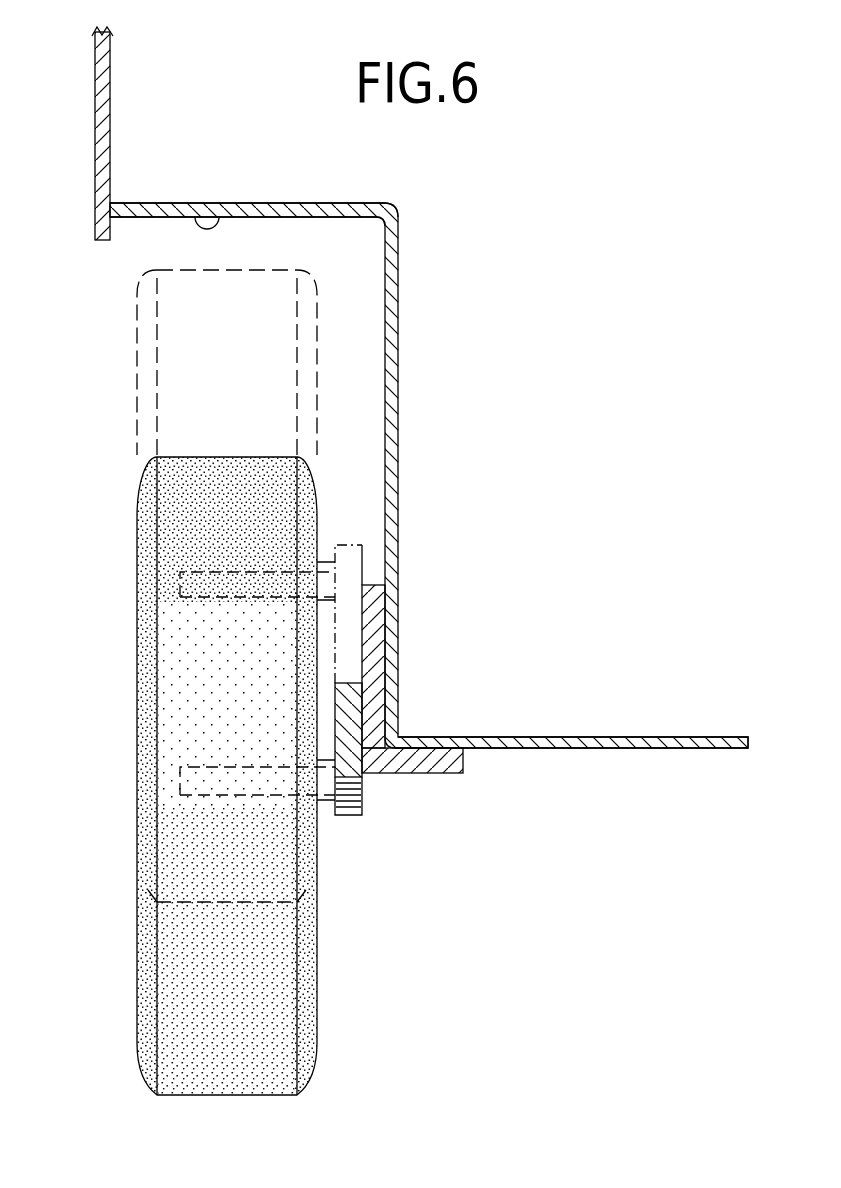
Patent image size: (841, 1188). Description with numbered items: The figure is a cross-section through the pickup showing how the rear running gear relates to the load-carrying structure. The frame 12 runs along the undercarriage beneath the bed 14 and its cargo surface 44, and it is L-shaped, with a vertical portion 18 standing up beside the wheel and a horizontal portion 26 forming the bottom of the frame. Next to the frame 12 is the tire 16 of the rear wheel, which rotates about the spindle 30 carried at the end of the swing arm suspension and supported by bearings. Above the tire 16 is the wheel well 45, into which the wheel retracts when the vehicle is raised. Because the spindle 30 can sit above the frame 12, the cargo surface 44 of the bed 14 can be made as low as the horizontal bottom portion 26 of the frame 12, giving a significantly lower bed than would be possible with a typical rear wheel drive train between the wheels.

The frame 12 is at (249, 683).
The bed 14 is at (430, 555).
The tire 16 is at (135, 967).
The vertical portion 18 is at (372, 673).
The horizontal portion 26 is at (428, 768).
The spindle 30 is at (190, 787).
The cargo surface 44 is at (672, 735).
The wheel well 45 is at (197, 203).